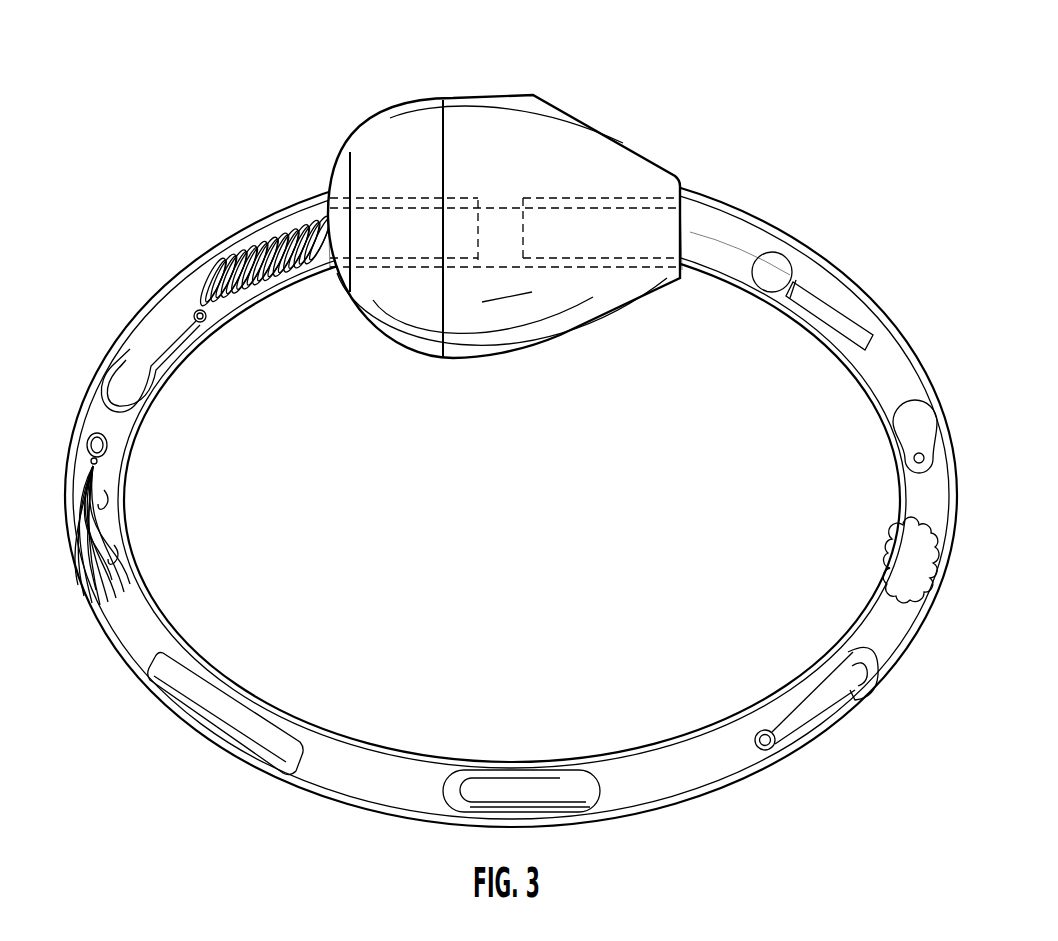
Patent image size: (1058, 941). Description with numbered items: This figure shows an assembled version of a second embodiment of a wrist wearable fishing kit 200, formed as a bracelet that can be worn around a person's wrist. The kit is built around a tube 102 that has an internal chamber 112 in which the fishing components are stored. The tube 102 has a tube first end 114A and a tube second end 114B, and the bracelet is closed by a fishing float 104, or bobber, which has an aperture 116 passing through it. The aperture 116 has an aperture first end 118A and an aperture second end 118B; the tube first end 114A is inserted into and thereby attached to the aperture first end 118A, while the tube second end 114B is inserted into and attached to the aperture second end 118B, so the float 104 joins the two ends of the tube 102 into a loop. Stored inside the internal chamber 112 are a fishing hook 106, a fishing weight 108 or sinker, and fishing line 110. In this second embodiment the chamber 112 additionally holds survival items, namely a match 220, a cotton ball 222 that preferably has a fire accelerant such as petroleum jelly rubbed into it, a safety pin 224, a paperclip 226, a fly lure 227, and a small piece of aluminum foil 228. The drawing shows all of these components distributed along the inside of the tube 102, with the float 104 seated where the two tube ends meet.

The wrist wearable fishing kit 200 is at (849, 136).
The tube 102 is at (80, 400).
The fishing float 104 is at (573, 133).
The fishing hook 106 is at (162, 347).
The fishing weight 108 is at (903, 442).
The fishing line 110 is at (280, 232).
The internal chamber 112 is at (700, 233).
The tube first end 114A is at (479, 242).
The tube second end 114B is at (520, 227).
The aperture 116 is at (491, 222).
The aperture first end 118A is at (327, 205).
The aperture second end 118B is at (700, 228).
The match 220 is at (810, 298).
The cotton ball 222 is at (902, 568).
The safety pin 224 is at (797, 693).
The paperclip 226 is at (445, 777).
The fly lure 227 is at (93, 530).
The small piece of aluminum foil 228 is at (232, 710).